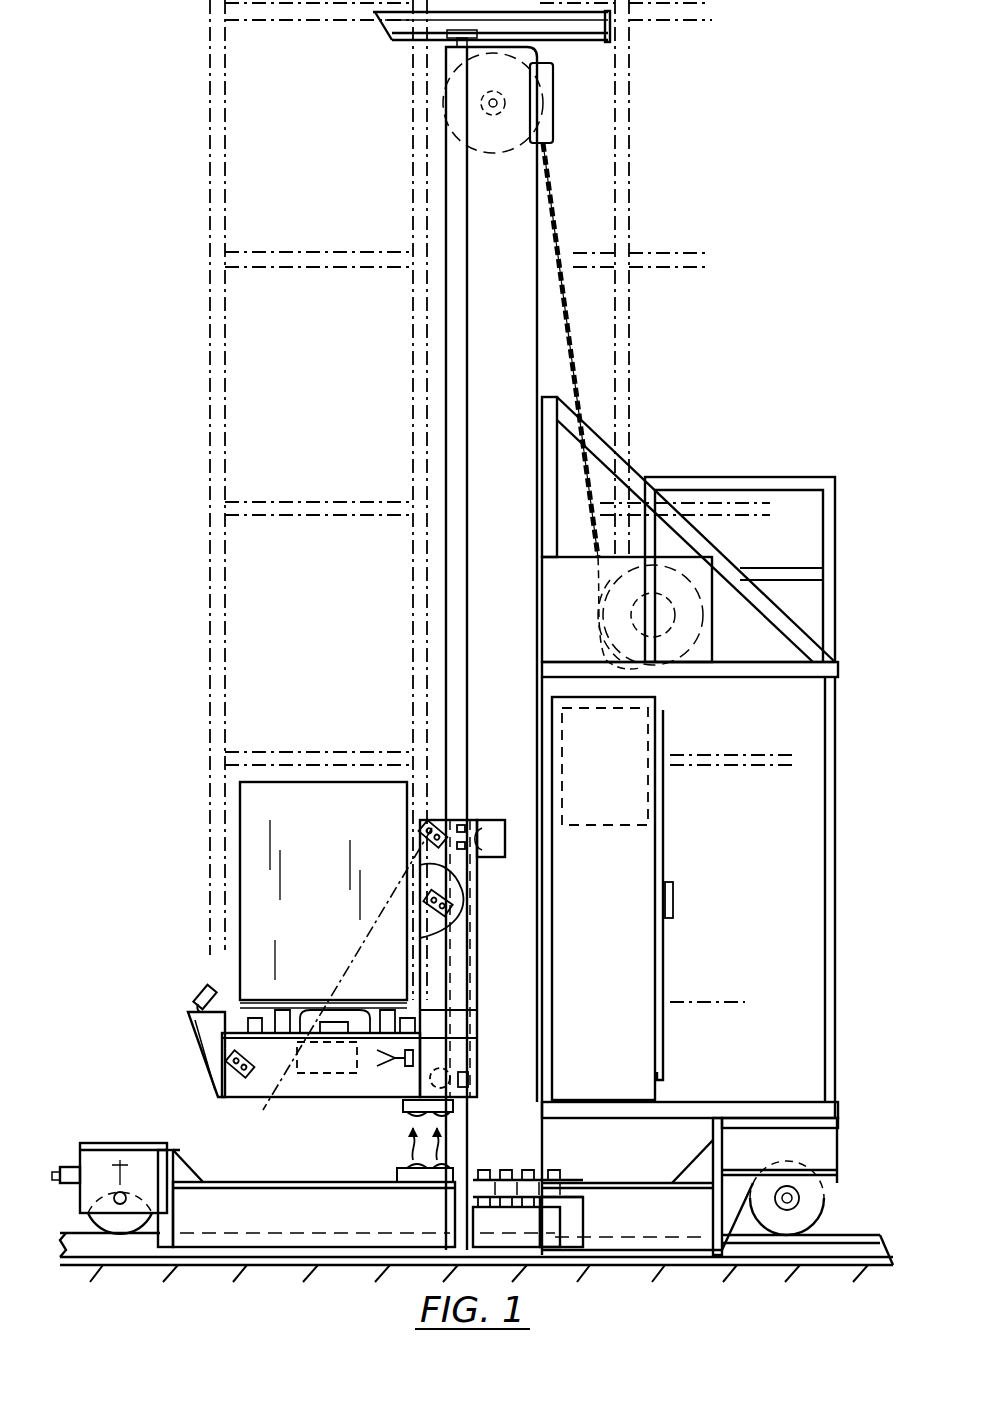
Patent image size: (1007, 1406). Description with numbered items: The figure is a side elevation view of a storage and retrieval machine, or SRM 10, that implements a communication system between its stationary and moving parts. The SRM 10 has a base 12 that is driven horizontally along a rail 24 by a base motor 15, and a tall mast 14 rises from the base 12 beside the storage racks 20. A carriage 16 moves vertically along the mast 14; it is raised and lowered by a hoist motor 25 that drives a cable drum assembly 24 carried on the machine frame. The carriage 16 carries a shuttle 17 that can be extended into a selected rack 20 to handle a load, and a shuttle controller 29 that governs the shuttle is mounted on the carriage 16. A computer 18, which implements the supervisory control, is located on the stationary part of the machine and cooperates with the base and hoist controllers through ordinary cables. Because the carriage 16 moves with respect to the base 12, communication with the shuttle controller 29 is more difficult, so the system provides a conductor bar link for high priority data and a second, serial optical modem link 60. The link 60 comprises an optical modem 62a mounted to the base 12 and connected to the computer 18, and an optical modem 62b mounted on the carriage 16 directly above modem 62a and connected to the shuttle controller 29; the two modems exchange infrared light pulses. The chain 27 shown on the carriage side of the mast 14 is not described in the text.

The storage and retrieval machine 10 is at (687, 407).
The base 12 is at (634, 1221).
The mast 14 is at (518, 259).
The base motor 15 is at (640, 867).
The carriage 16 is at (200, 1059).
The shuttle 17 is at (240, 997).
The computer 18 is at (638, 733).
The rack 20 is at (325, 267).
The rail 24 is at (708, 630).
The hoist motor 25 is at (697, 565).
The chain 27 is at (332, 985).
The shuttle controller 29 is at (270, 845).
The optical modem link 60 is at (386, 1151).
The optical modem 62a is at (397, 1178).
The optical modem 62b is at (400, 1105).